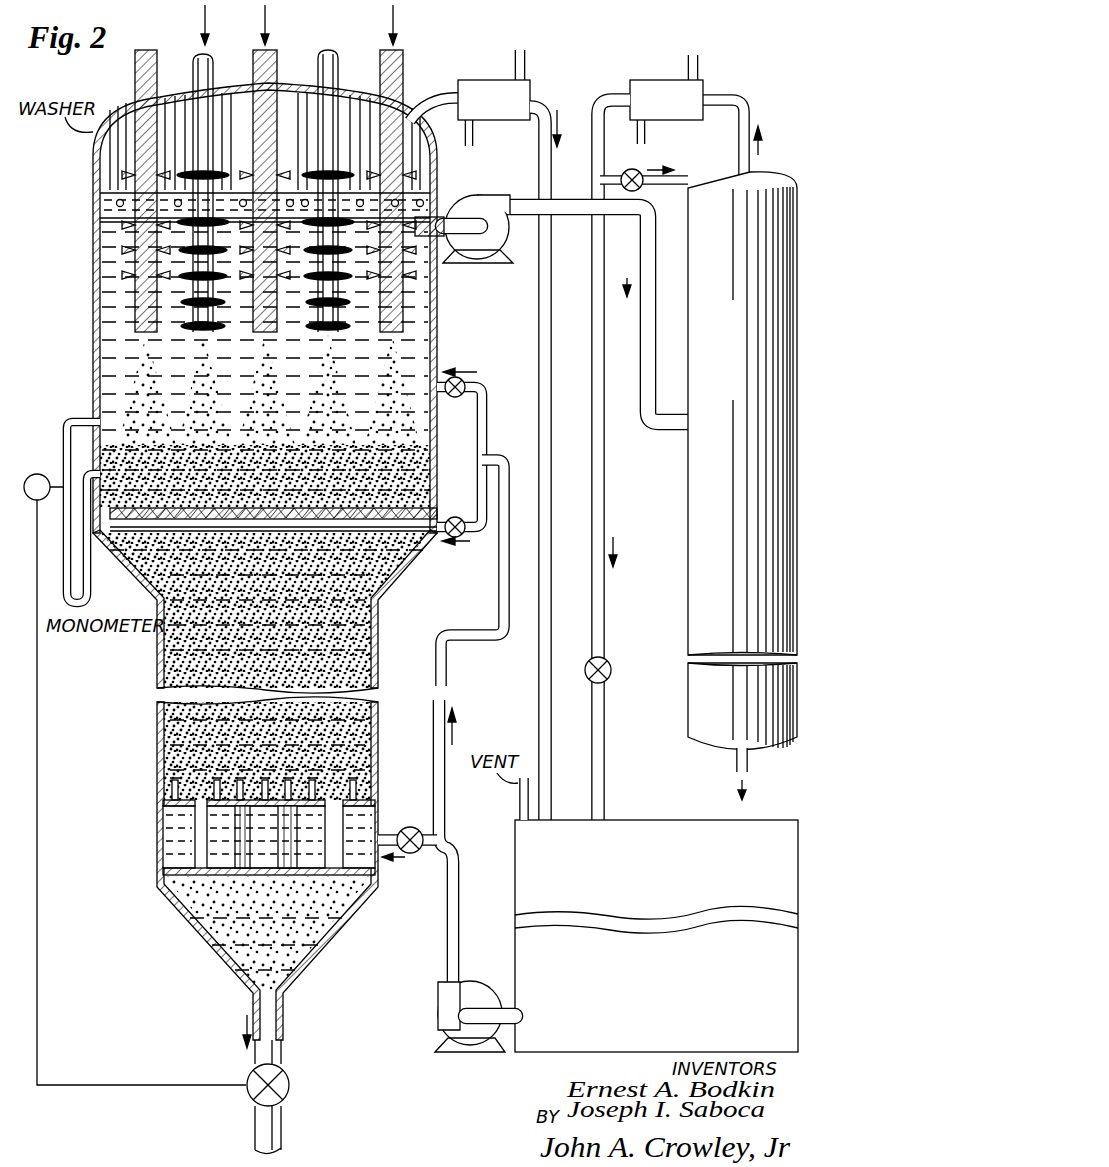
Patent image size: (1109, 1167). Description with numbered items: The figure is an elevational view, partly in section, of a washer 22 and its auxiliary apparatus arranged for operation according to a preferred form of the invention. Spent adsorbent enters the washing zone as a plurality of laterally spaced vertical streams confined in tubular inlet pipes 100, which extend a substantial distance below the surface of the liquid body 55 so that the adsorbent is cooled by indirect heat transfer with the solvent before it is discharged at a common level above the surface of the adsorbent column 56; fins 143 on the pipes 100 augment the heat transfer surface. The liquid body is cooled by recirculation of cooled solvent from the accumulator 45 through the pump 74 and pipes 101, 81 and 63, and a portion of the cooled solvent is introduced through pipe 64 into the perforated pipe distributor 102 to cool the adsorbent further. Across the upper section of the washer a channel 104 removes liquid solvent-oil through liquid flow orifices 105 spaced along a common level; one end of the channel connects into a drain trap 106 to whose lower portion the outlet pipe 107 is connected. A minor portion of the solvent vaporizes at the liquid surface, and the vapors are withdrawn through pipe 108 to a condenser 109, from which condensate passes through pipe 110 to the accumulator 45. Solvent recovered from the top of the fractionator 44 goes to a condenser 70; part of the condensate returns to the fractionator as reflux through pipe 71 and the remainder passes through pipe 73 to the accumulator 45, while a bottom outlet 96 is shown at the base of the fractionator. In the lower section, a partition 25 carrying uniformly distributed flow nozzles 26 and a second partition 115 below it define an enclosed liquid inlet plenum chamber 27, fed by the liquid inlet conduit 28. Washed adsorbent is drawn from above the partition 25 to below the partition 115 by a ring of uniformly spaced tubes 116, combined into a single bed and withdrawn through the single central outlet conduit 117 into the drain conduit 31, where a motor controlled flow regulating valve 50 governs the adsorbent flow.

The washer 22 is at (92, 305).
The partition 25 is at (163, 830).
The flow nozzles 26 is at (316, 797).
The liquid inlet plenum chamber 27 is at (173, 837).
The liquid inlet conduit 28 is at (430, 853).
The drain conduit 31 is at (283, 1128).
The fractionator 44 is at (742, 461).
The accumulator 45 is at (656, 936).
The flow regulating valve 50 is at (290, 1085).
The liquid body 55 is at (107, 360).
The column 56 is at (433, 457).
The pipe 63 is at (484, 418).
The pipe 64 is at (475, 532).
The condenser 70 is at (696, 116).
The pipe 71 is at (685, 177).
The pipe 73 is at (600, 517).
The pump 74 is at (445, 1026).
The pipe 81 is at (503, 594).
The fractionator outlet 96 is at (733, 760).
The tubular inlet pipes 100 is at (193, 62).
The pipe 101 is at (447, 958).
The perforated pipe distributor 102 is at (398, 568).
The channel 104 is at (230, 193).
The liquid flow orifices 105 is at (290, 197).
The drain trap 106 is at (424, 257).
The outlet pipe 107 is at (470, 215).
The pipe 108 is at (437, 98).
The condenser 109 is at (494, 98).
The pipe 110 is at (539, 333).
The second partition 115 is at (173, 870).
The tubes 116 is at (372, 813).
The central outlet conduit 117 is at (284, 1052).
The fins 143 is at (307, 318).